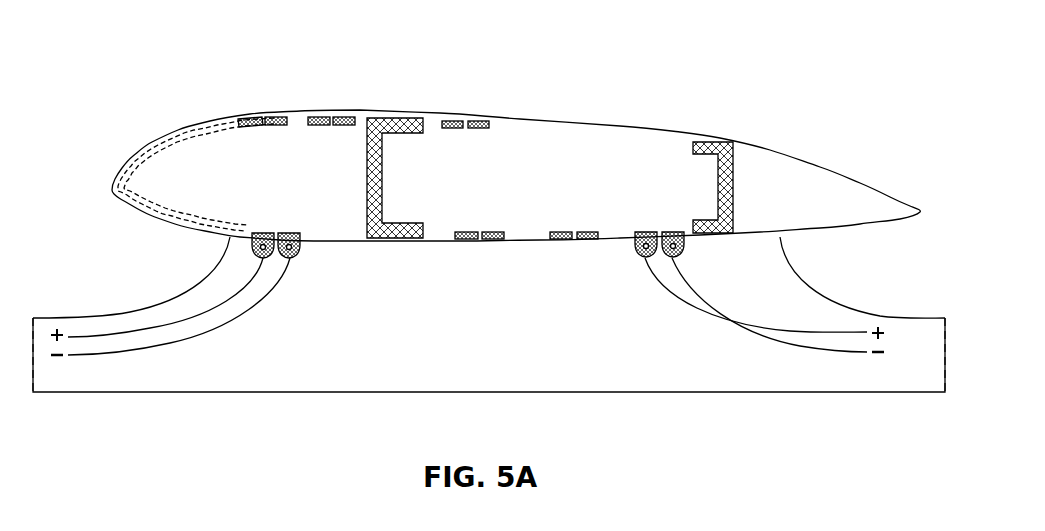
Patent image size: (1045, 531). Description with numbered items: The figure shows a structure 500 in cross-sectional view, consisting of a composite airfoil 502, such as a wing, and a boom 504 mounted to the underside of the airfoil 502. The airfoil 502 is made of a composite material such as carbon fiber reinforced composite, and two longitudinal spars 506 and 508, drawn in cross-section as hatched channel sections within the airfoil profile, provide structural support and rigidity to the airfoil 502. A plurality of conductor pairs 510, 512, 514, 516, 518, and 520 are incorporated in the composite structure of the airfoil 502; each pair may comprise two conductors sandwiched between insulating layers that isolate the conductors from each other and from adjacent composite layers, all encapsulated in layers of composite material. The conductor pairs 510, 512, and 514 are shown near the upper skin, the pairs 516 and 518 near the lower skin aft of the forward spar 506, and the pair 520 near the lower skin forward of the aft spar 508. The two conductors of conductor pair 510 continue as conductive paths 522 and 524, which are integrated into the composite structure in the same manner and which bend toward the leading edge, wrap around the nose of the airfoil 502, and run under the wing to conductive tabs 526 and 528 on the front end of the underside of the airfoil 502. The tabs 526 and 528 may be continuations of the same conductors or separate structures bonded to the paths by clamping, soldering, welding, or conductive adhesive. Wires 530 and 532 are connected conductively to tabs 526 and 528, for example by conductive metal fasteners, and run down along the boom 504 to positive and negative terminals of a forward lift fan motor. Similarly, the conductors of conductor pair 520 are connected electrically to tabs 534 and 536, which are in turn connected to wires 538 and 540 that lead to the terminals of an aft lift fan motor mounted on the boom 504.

The structure 500 is at (138, 44).
The airfoil 502 is at (641, 126).
The boom 504 is at (327, 380).
The longitudinal spar 506 is at (383, 162).
The longitudinal spar 508 is at (733, 180).
The conductor pair 510 is at (288, 112).
The conductor pair 512 is at (355, 112).
The conductor pair 514 is at (488, 112).
The conductor pair 516 is at (505, 246).
The conductor pair 518 is at (598, 246).
The conductor pair 520 is at (680, 226).
The conductive path 522 is at (121, 167).
The conductive path 524 is at (152, 155).
The conductive tab 526 is at (267, 234).
The conductive tab 528 is at (295, 234).
The wire 530 is at (145, 329).
The wire 532 is at (222, 328).
The tab 534 is at (683, 242).
The tab 536 is at (644, 259).
The wire 538 is at (762, 319).
The wire 540 is at (720, 326).